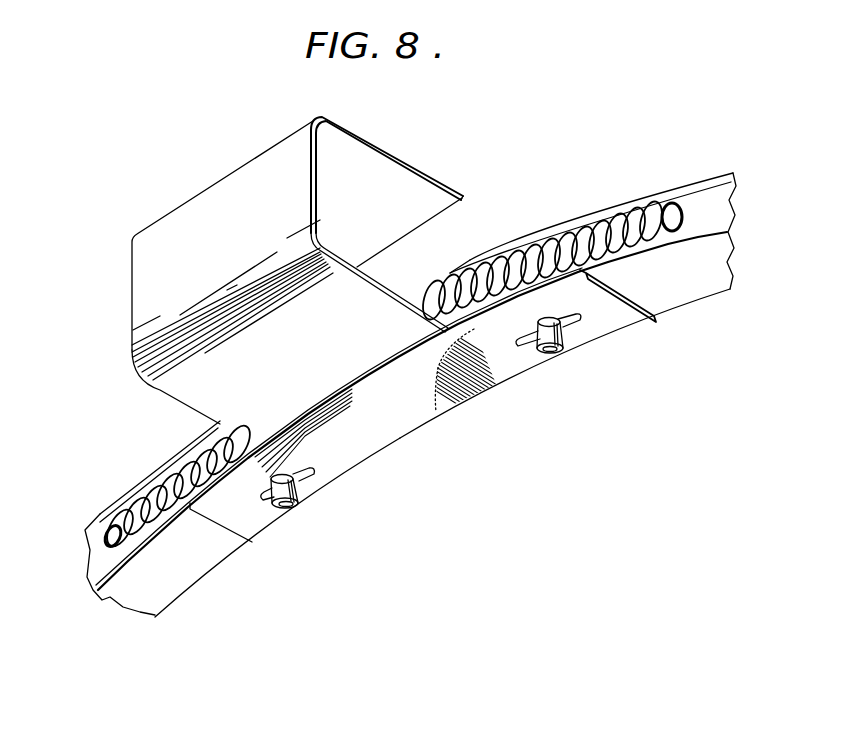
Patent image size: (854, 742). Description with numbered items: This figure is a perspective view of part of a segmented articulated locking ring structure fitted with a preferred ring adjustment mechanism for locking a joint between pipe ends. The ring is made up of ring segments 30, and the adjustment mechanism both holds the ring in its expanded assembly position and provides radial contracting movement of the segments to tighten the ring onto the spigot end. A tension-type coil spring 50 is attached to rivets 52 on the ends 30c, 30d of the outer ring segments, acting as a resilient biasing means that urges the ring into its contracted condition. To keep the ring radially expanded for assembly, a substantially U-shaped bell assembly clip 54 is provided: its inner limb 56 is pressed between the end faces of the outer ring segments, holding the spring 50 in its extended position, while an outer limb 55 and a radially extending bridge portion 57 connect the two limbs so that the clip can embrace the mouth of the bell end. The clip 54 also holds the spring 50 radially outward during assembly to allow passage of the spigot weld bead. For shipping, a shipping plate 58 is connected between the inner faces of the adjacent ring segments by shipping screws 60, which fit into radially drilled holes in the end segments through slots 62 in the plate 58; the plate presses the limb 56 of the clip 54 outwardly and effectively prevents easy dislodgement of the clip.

The ring segment 30 is at (706, 281).
The ring end 30c is at (208, 553).
The ring end 30d is at (679, 293).
The tension-type coil spring 50 is at (166, 482).
The rivet 52 is at (674, 204).
The bell assembly clip 54 is at (118, 280).
The outer limb 55 is at (397, 172).
The inner limb 56 is at (325, 378).
The bridge portion 57 is at (230, 195).
The shipping plate 58 is at (500, 380).
The shipping screw 60 is at (570, 338).
The slot 62 is at (527, 348).